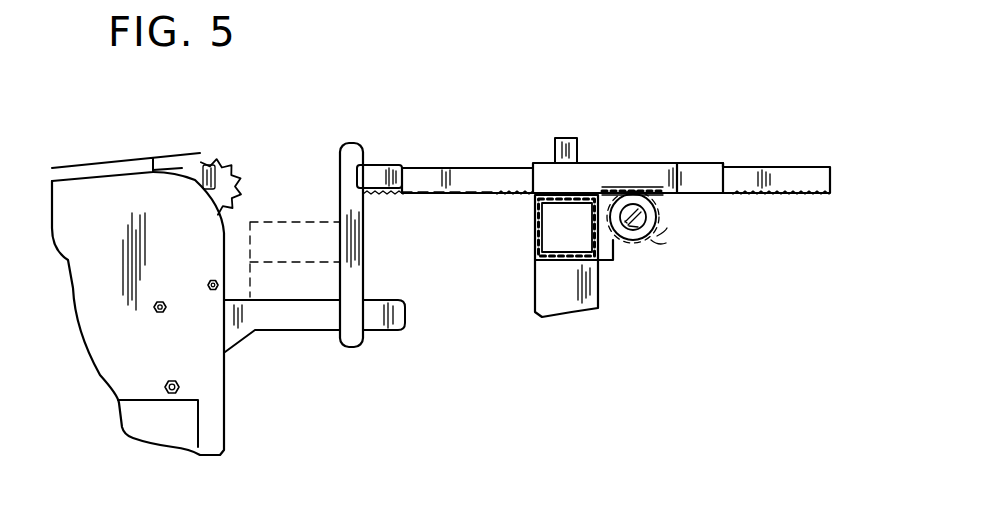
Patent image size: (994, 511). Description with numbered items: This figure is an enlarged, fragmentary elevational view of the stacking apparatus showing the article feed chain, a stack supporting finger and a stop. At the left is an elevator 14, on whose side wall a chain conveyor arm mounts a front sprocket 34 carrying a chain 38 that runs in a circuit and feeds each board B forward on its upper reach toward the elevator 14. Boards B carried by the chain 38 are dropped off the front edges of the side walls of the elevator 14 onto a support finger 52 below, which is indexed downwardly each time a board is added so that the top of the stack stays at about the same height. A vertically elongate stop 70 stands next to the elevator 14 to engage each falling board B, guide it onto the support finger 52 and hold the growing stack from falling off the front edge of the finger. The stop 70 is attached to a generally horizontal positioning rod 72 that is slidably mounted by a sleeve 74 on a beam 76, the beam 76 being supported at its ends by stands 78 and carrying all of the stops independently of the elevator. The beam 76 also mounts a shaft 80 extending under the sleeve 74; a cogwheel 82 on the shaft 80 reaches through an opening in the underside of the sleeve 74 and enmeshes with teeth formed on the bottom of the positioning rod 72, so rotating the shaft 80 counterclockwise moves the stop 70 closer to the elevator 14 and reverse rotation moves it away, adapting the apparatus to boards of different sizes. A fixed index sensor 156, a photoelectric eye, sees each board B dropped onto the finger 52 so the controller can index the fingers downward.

The elevator 14 is at (108, 327).
The front sprocket 34 is at (250, 122).
The chain 38 is at (128, 163).
The support finger 52 is at (278, 320).
The stop 70 is at (374, 102).
The positioning rod 72 is at (520, 178).
The sleeve 74 is at (697, 172).
The beam 76 is at (567, 263).
The stand 78 is at (555, 295).
The shaft 80 is at (643, 212).
The cogwheel 82 is at (653, 233).
The index sensor 156 is at (378, 174).
The board B is at (290, 262).